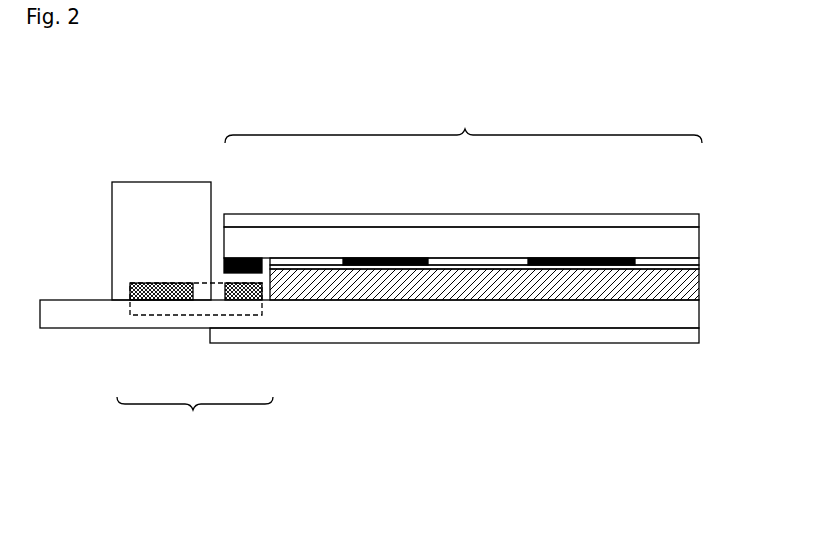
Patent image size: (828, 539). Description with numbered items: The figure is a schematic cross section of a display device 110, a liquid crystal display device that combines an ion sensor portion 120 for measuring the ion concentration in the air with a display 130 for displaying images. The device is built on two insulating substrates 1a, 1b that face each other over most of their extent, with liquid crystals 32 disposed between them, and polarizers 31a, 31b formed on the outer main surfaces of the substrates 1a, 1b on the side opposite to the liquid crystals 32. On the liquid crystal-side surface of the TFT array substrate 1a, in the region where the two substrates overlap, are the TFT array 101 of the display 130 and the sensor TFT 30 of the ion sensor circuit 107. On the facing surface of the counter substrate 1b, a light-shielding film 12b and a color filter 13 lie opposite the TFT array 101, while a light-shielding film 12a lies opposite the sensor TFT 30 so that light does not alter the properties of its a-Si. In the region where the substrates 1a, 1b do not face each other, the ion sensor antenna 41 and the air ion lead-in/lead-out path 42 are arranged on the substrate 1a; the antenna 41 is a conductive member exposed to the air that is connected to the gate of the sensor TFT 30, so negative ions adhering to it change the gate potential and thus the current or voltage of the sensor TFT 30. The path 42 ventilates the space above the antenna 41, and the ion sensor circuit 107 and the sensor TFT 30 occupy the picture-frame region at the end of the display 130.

The display device 110 is at (680, 115).
The display 130 is at (463, 122).
The ion sensor portion 120 is at (195, 420).
The insulating substrate 1a is at (335, 318).
The insulating substrate 1b is at (563, 235).
The polarizer 31a is at (513, 334).
The polarizer 31b is at (653, 218).
The TFT array 101 is at (647, 300).
The light-shielding film 12a is at (240, 258).
The light-shielding film 12b is at (383, 258).
The color filter 13 is at (488, 262).
The liquid crystals 32 is at (700, 264).
The sensor TFT 30 is at (242, 287).
The ion sensor antenna 41 is at (132, 292).
The air ion lead-in/lead-out path 42 is at (122, 218).
The ion sensor circuit 107 is at (173, 307).